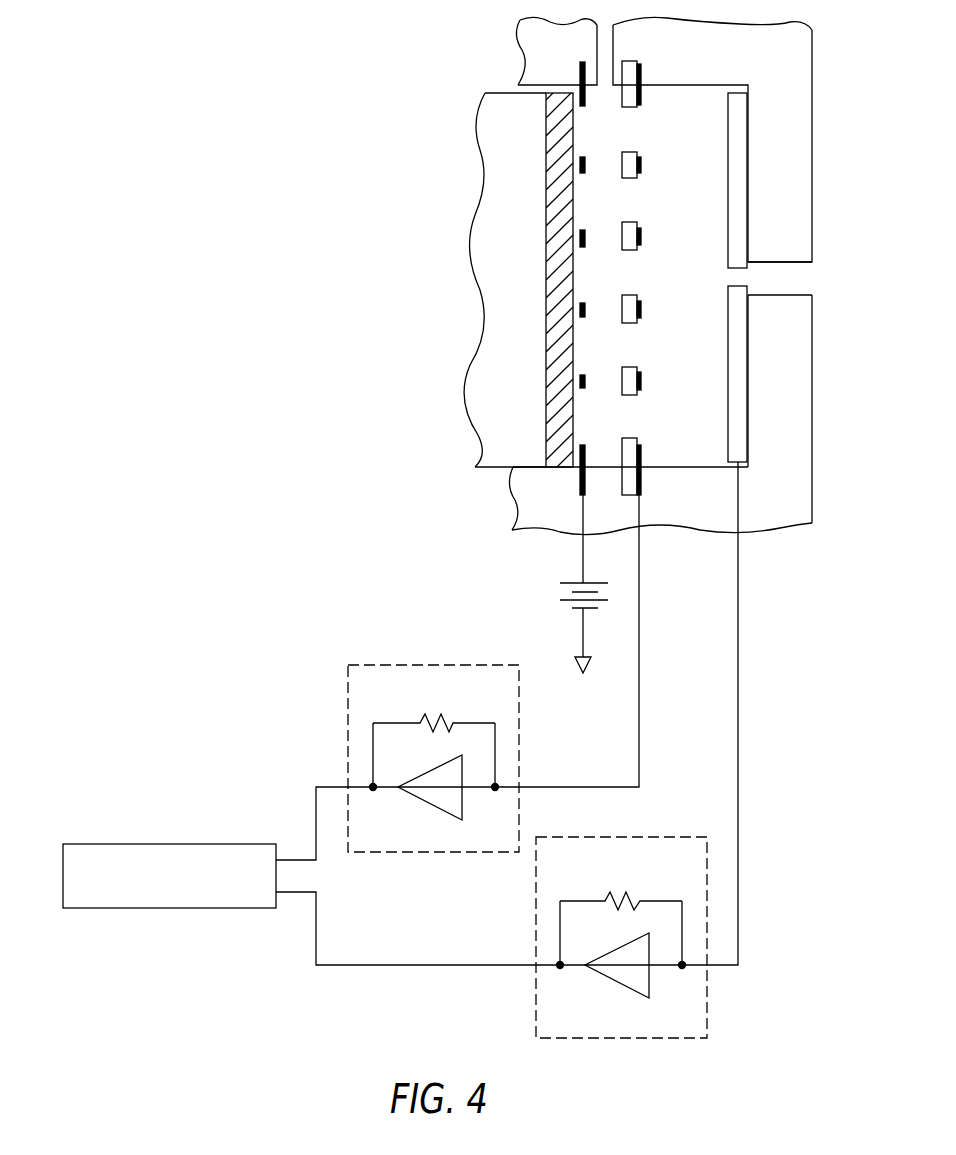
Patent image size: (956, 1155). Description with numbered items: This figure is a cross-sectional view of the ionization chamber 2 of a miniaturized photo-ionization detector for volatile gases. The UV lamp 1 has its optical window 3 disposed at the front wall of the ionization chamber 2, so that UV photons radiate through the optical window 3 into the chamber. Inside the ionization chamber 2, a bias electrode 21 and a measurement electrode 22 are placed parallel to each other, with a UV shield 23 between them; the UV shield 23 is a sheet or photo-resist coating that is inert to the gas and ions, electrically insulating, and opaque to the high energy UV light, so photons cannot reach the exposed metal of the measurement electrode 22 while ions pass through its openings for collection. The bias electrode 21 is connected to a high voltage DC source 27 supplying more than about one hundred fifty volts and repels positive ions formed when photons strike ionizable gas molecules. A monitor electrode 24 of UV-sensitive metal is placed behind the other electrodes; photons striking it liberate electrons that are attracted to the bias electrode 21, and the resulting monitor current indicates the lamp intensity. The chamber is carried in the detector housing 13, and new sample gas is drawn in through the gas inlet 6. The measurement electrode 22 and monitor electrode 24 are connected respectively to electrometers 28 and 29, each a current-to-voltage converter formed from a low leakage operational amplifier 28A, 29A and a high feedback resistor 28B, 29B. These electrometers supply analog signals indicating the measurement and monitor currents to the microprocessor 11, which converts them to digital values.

The UV lamp 1 is at (483, 219).
The ionization chamber 2 is at (697, 252).
The optical window 3 is at (549, 156).
The gas inlet 6 is at (800, 275).
The microprocessor 11 is at (260, 910).
The detector housing 13 is at (800, 415).
The bias electrode 21 is at (583, 62).
The measurement electrode 22 is at (641, 75).
The UV shield 23 is at (625, 62).
The monitor electrode 24 is at (742, 155).
The high voltage DC source 27 is at (551, 594).
The electrometer 28 is at (457, 677).
The operational amplifier 28A is at (432, 797).
The feedback resistor 28B is at (433, 715).
The electrometer 29 is at (507, 750).
The operational amplifier 29A is at (620, 975).
The feedback resistor 29B is at (622, 893).